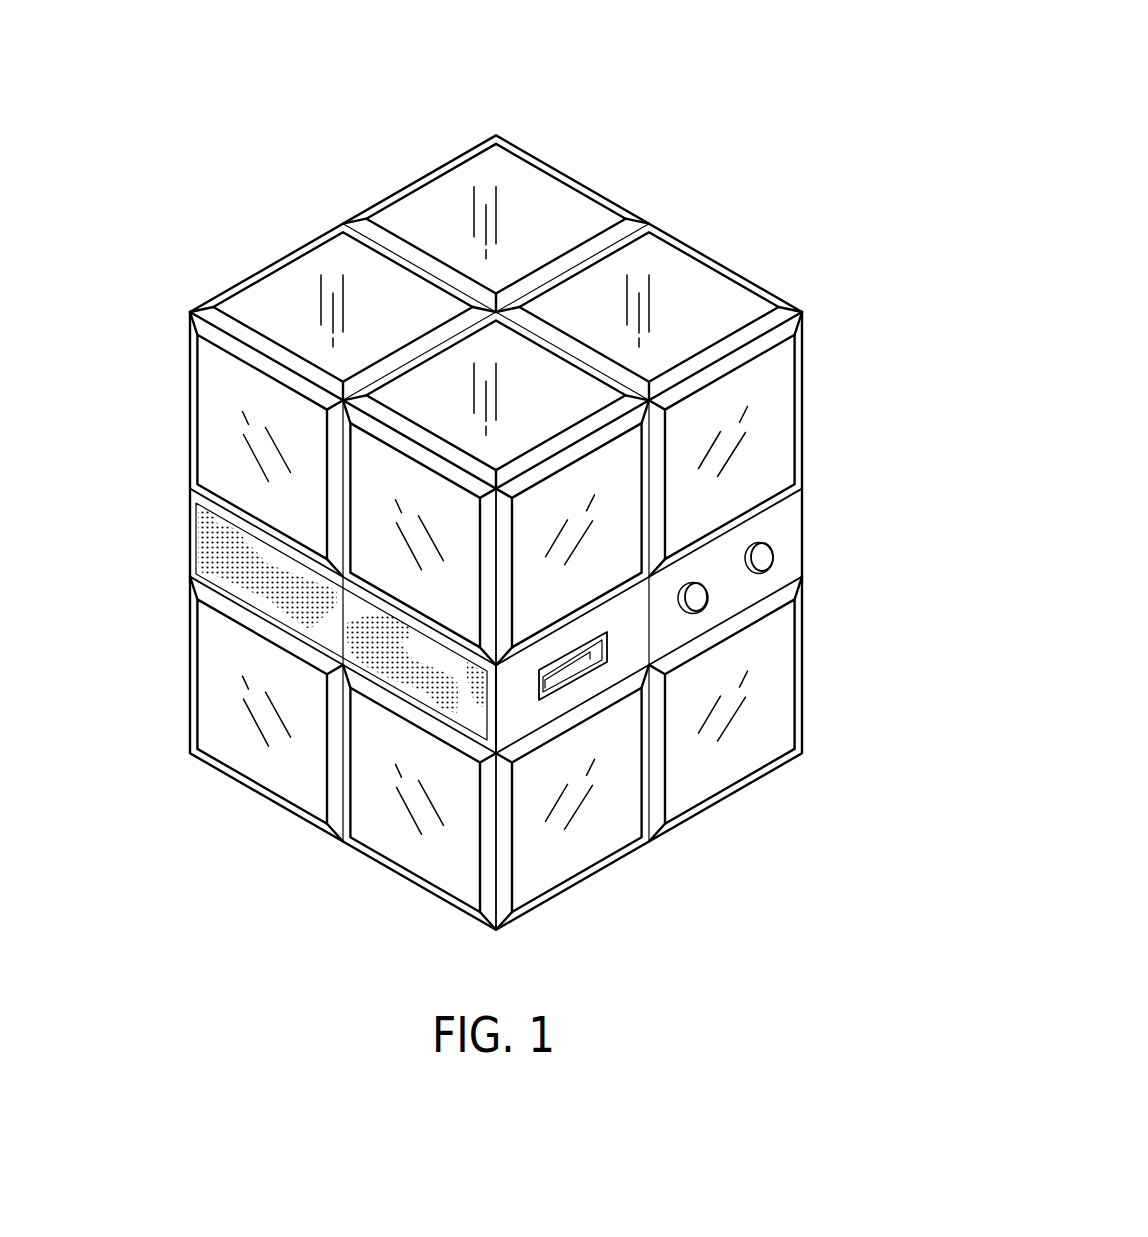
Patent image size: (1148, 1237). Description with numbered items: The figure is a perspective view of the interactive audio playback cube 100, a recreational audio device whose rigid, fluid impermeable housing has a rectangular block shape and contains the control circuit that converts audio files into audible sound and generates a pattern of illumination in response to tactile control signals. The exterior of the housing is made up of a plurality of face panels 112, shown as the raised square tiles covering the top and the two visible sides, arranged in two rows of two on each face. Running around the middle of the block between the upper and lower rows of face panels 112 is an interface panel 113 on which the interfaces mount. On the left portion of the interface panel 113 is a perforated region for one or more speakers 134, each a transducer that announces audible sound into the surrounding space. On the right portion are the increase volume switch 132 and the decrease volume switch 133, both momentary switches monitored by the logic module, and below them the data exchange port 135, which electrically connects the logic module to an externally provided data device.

The interactive audio playback cube 100 is at (208, 115).
The face panel 112 is at (770, 383).
The interface panel 113 is at (190, 527).
The increase volume switch 132 is at (700, 592).
The decrease volume switch 133 is at (770, 554).
The speaker 134 is at (237, 553).
The data exchange port 135 is at (570, 665).